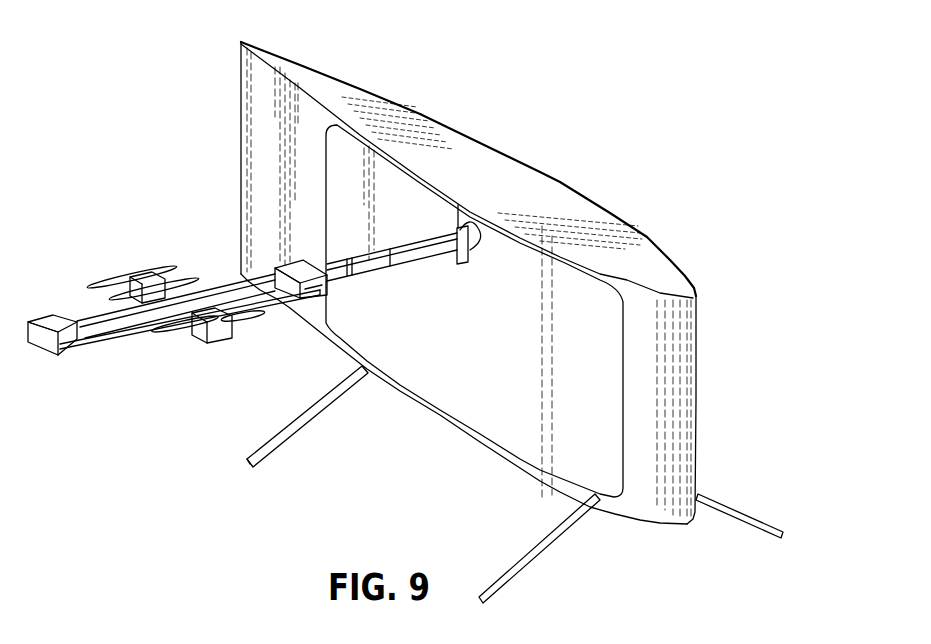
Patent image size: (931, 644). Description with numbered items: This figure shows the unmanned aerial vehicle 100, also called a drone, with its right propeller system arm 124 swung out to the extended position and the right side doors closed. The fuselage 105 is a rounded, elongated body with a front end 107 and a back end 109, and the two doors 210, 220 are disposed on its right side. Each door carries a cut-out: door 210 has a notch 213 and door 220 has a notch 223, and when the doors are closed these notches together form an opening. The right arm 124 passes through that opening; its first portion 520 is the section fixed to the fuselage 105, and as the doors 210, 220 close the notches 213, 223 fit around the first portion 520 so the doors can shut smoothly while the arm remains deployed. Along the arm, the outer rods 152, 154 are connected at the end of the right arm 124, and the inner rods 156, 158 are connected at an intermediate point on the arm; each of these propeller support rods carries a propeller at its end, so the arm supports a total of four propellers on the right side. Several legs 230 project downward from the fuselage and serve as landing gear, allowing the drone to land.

The unmanned aerial vehicle 100 is at (500, 102).
The fuselage 105 is at (553, 177).
The front end 107 is at (694, 297).
The back end 109 is at (241, 43).
The right propeller system arm 124 is at (43, 355).
The outer rod 152 is at (153, 343).
The outer rod 154 is at (83, 310).
The inner rod 156 is at (245, 340).
The inner rod 158 is at (222, 283).
The door 210 is at (418, 378).
The notch 213 is at (453, 237).
The door 220 is at (530, 460).
The notch 223 is at (468, 247).
The legs 230 is at (267, 443).
The first portion 520 is at (430, 255).